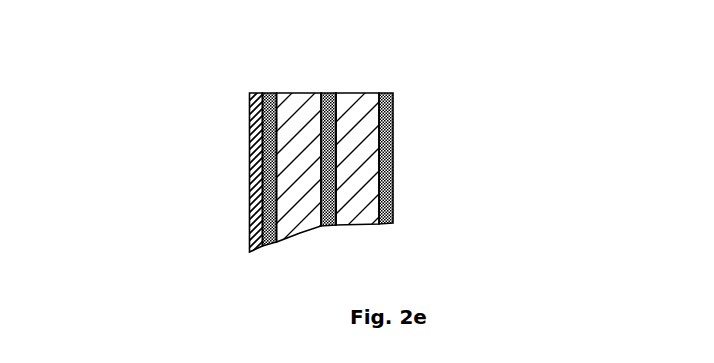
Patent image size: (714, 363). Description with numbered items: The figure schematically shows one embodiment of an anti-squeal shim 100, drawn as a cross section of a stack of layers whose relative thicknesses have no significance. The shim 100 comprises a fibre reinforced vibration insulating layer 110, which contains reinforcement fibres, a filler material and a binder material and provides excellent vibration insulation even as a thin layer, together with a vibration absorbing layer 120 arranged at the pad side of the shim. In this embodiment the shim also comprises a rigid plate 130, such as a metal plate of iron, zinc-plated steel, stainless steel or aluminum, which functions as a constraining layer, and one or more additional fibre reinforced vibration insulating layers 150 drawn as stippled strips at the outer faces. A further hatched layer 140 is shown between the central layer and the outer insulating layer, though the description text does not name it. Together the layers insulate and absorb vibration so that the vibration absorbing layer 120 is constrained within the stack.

The anti-squeal shim 100 is at (165, 138).
The fibre reinforced vibration insulating layer 110 is at (331, 93).
The vibration absorbing layer 120 is at (260, 192).
The rigid plate 130 is at (307, 107).
The second intermediate layer 140 is at (361, 129).
The additional fibre reinforced vibration insulating layer 150 is at (272, 138).